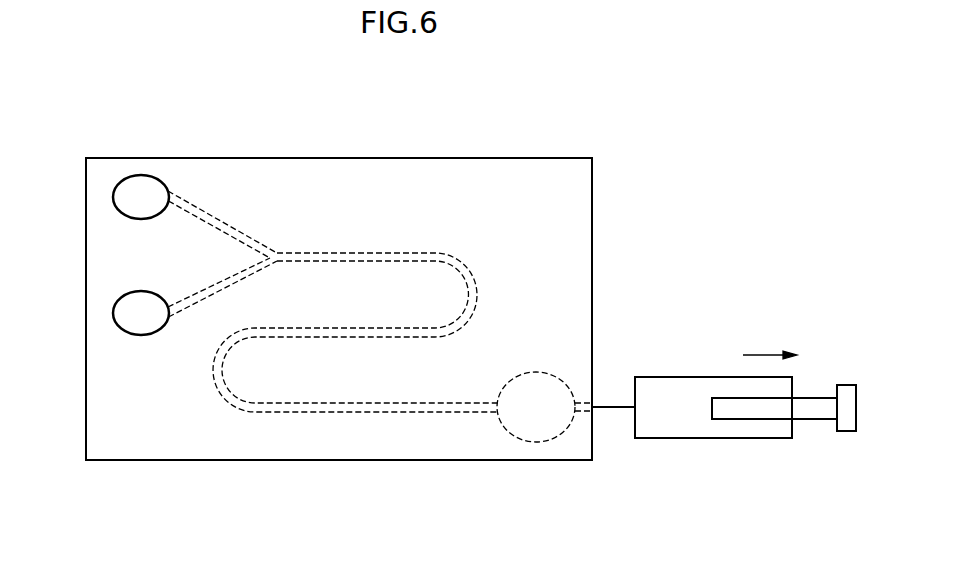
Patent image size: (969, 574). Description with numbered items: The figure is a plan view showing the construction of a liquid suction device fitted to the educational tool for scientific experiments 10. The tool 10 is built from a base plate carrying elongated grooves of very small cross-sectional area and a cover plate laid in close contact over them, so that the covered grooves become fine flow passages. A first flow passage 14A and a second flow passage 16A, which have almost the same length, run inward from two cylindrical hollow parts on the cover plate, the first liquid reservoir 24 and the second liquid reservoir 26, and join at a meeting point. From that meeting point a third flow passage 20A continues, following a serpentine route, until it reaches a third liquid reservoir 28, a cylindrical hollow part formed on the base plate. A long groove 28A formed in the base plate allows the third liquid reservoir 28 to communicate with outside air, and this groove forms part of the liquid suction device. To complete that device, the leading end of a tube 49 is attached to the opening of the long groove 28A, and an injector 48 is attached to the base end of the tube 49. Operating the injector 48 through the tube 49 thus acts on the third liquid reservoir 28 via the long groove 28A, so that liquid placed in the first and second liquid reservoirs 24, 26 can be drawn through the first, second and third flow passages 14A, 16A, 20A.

The educational tool for scientific experiments 10 is at (548, 114).
The first liquid reservoir 24 is at (158, 176).
The second liquid reservoir 26 is at (135, 336).
The first flow passage 14A is at (232, 229).
The second flow passage 16A is at (187, 312).
The third flow passage 20A is at (355, 413).
The third liquid reservoir 28 is at (532, 386).
The long groove 28A is at (578, 413).
The tube 49 is at (621, 406).
The injector 48 is at (698, 377).